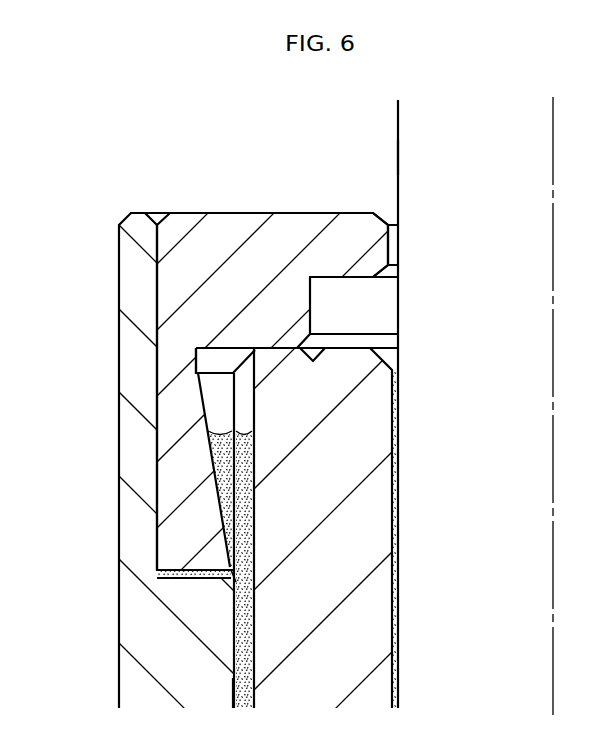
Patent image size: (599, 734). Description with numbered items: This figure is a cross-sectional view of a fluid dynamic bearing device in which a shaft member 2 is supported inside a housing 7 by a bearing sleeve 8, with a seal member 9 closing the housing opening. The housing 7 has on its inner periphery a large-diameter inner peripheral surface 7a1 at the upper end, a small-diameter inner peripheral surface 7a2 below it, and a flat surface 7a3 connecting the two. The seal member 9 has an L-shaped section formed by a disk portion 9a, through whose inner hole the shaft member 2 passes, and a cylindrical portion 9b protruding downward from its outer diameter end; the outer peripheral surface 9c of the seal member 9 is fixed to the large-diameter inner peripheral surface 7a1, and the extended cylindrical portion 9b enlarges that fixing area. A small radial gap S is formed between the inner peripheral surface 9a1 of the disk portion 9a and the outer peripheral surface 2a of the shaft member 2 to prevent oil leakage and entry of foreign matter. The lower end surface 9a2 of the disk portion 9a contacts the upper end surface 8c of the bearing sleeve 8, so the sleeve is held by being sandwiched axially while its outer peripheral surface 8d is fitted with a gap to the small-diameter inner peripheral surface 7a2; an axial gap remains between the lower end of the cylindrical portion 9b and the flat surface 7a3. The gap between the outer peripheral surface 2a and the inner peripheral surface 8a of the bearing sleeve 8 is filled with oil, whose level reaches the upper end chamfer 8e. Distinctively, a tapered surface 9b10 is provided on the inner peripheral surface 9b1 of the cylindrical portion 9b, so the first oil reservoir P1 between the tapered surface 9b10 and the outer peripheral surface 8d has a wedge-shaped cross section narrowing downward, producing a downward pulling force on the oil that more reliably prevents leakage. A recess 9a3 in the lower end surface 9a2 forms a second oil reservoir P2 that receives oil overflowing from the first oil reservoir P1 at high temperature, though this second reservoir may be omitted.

The shaft member 2 is at (388, 117).
The outer peripheral surface 2a is at (398, 157).
The housing 7 is at (299, 446).
The large-diameter inner peripheral surface 7a1 is at (160, 243).
The small-diameter inner peripheral surface 7a2 is at (233, 633).
The flat surface 7a3 is at (178, 566).
The bearing sleeve 8 is at (299, 465).
The inner peripheral surface 8a is at (398, 573).
The upper end surface 8c is at (285, 348).
The outer peripheral surface 8d is at (233, 613).
The upper end chamfer 8e is at (396, 352).
The seal member 9 is at (275, 433).
The disk portion 9a is at (285, 230).
The inner peripheral surface 9a1 is at (400, 238).
The lower end surface 9a2 is at (232, 385).
The recess 9a3 is at (348, 288).
The cylindrical portion 9b is at (178, 465).
The inner peripheral surface 9b1 is at (226, 505).
The tapered surface 9b10 is at (236, 503).
The outer peripheral surface 9c is at (157, 276).
The first oil reservoir P1 is at (222, 417).
The second oil reservoir P2 is at (365, 299).
The radial gap S is at (400, 256).